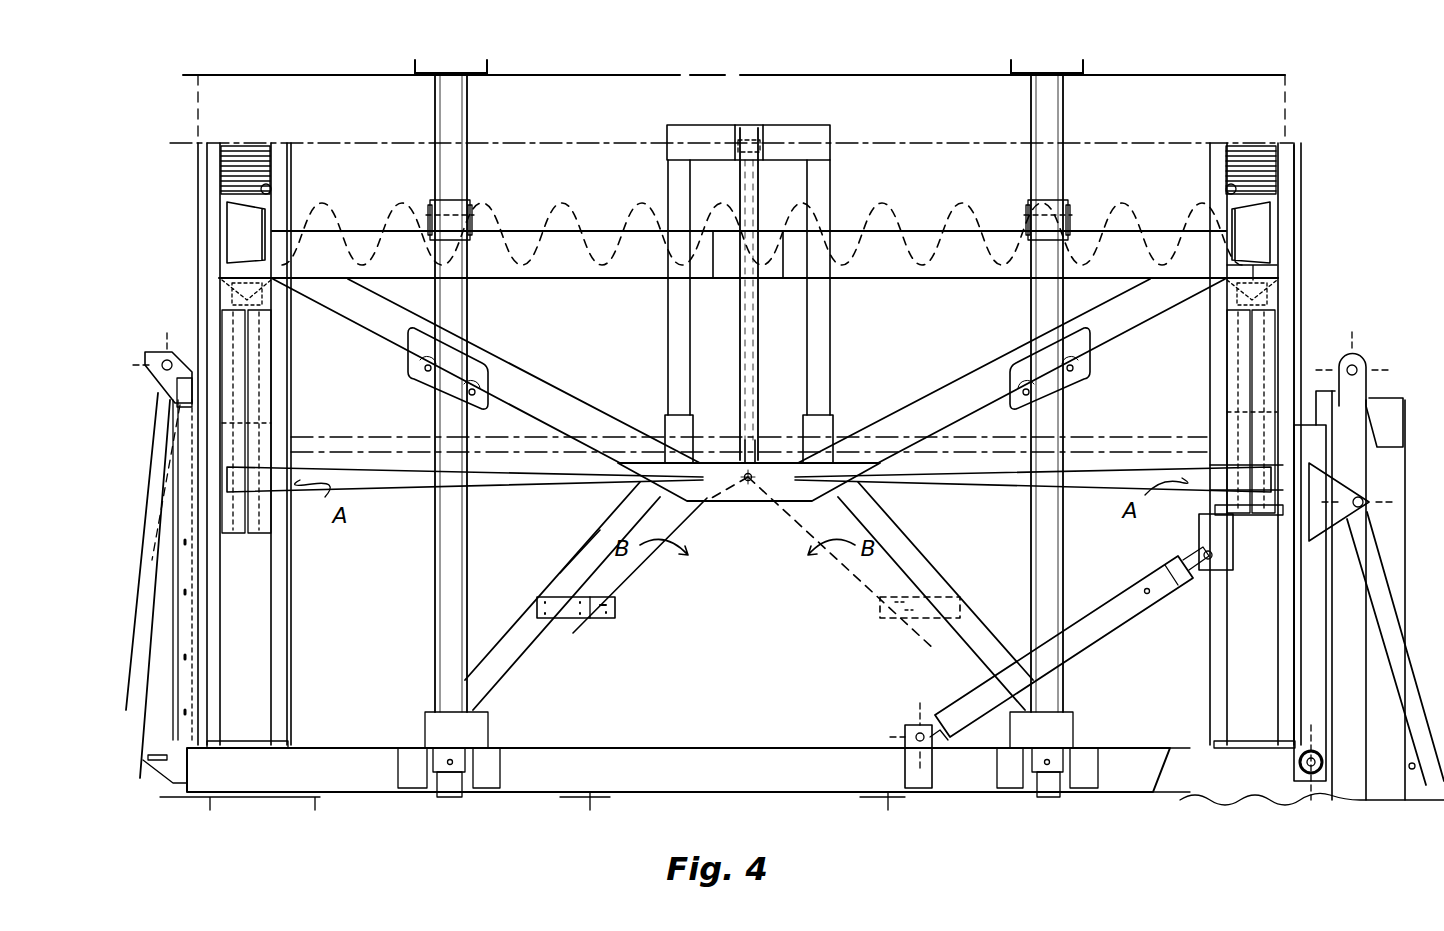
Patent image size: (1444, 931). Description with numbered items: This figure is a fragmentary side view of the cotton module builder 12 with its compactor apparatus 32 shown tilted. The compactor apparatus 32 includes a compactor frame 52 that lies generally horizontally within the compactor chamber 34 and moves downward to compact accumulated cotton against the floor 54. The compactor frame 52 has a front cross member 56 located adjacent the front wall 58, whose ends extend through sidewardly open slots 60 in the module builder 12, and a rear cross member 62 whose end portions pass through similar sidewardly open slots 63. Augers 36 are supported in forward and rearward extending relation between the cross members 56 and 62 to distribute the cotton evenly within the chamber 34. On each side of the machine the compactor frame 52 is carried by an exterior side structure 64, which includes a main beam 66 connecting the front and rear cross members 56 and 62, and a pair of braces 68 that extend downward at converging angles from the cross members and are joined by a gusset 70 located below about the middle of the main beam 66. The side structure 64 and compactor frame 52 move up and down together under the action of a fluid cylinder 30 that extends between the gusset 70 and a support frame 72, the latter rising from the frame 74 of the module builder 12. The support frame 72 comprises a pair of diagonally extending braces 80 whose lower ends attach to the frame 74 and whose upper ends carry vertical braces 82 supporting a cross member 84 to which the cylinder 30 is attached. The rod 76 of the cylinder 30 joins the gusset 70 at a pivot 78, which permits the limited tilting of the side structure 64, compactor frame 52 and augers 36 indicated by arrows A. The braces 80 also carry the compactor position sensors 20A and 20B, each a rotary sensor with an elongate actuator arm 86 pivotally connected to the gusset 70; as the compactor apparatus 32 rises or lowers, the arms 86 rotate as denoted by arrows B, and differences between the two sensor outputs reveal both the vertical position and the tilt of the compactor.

The module builder 12 is at (1297, 132).
The compactor position sensor 20A is at (598, 622).
The compactor position sensor 20B is at (878, 618).
The fluid cylinder 30 is at (760, 182).
The compactor apparatus 32 is at (1296, 235).
The compactor chamber 34 is at (1130, 705).
The auger 36 is at (903, 212).
The compactor frame 52 is at (1272, 250).
The floor 54 is at (727, 746).
The front cross member 56 is at (228, 232).
The front wall 58 is at (198, 278).
The sidewardly open slot 60 is at (270, 185).
The rear cross member 62 is at (1271, 205).
The sidewardly open slot 63 is at (1232, 190).
The exterior side structure 64 is at (1118, 265).
The main beam 66 is at (1130, 250).
The brace 68 is at (552, 390).
The gusset 70 is at (770, 502).
The support frame 72 is at (690, 125).
The frame 74 is at (890, 793).
The rod 76 is at (745, 462).
The pivot 78 is at (747, 482).
The diagonally extending brace 80 is at (505, 683).
The vertical brace 82 is at (668, 373).
The cross member 84 is at (776, 125).
The actuator arm 86 is at (635, 578).